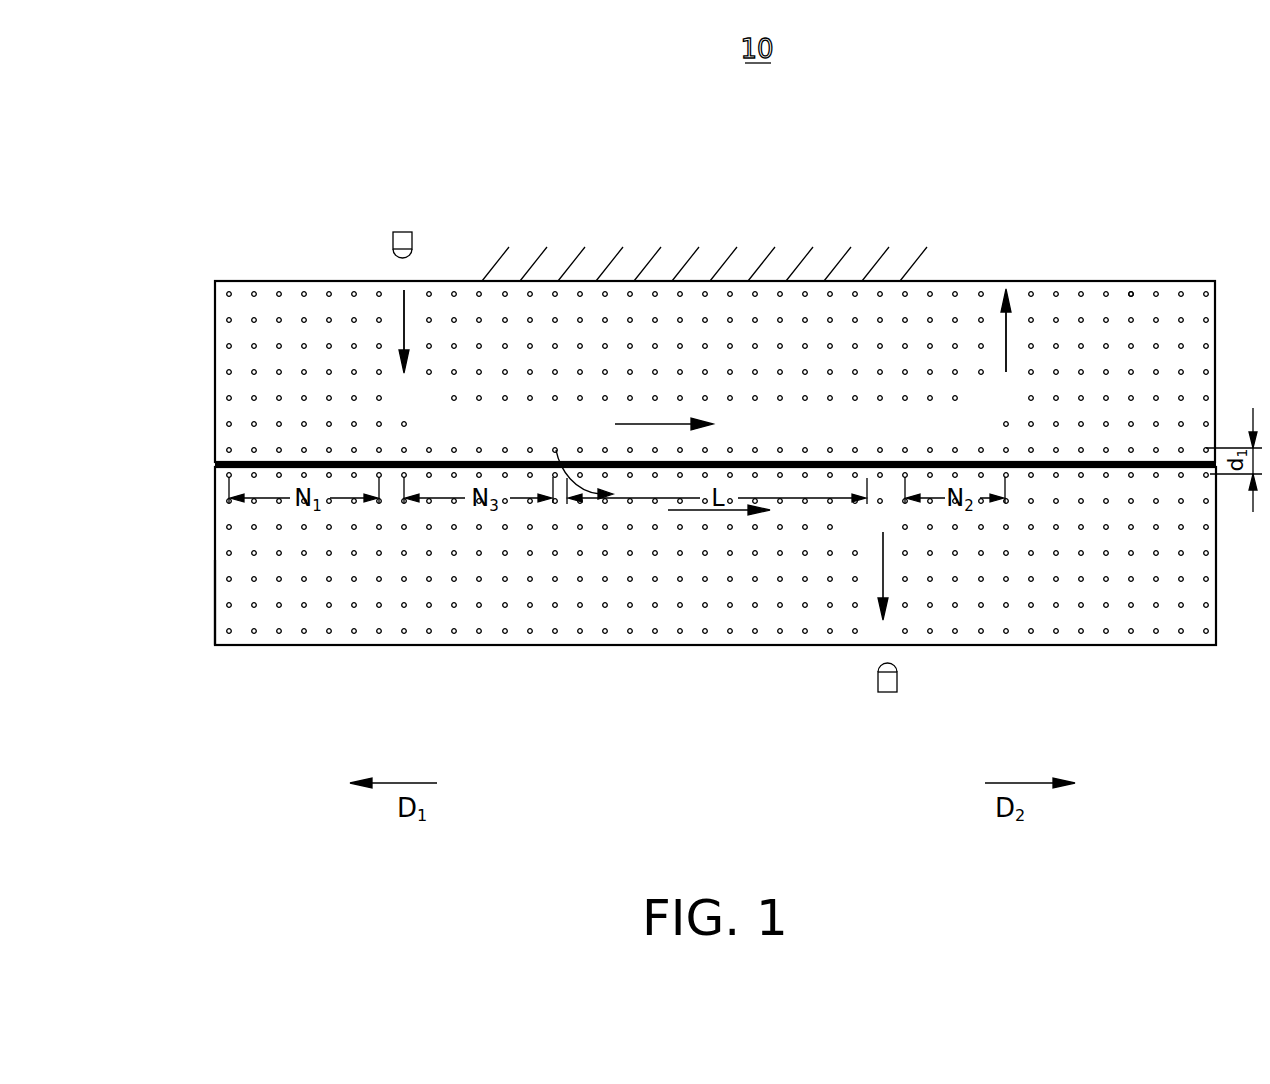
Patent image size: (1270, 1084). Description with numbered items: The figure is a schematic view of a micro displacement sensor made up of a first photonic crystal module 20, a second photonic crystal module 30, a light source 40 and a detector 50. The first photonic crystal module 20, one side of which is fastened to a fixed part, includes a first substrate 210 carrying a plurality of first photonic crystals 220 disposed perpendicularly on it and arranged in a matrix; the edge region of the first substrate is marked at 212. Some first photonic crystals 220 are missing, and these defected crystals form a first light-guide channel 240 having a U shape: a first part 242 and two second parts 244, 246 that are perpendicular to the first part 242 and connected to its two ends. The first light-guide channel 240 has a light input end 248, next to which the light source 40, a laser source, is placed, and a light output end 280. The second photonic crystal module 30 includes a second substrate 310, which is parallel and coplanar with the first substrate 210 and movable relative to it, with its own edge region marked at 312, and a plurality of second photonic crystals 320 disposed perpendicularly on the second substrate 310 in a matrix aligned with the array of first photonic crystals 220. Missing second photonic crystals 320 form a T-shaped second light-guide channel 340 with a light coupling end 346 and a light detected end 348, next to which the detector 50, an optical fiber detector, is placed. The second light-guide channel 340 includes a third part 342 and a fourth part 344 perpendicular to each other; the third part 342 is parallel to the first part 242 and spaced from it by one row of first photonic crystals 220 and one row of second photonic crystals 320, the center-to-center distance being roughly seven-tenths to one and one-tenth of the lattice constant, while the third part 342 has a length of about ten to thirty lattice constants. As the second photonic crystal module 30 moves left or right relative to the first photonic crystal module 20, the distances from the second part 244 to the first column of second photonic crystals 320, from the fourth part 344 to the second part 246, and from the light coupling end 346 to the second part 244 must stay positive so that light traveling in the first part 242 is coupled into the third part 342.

The first photonic crystal module 20 is at (1219, 287).
The second photonic crystal module 30 is at (1222, 633).
The light source 40 is at (400, 233).
The detector 50 is at (898, 680).
The first substrate 210 is at (1194, 283).
The top surface of first plate 212 is at (241, 281).
The first photonic crystals 220 is at (1132, 291).
The first light-guide channel 240 is at (992, 181).
The first part 242 is at (749, 423).
The second part 244 is at (420, 290).
The second part 246 is at (990, 323).
The light input end 248 is at (396, 275).
The light output end 280 is at (1020, 275).
The second substrate 310 is at (245, 630).
The side surface of second plate 312 is at (215, 593).
The second photonic crystals 320 is at (355, 632).
The second light-guide channel 340 is at (843, 708).
The third part 342 is at (650, 510).
The fourth part 344 is at (868, 622).
The light coupling end 346 is at (579, 506).
The light detected end 348 is at (908, 655).